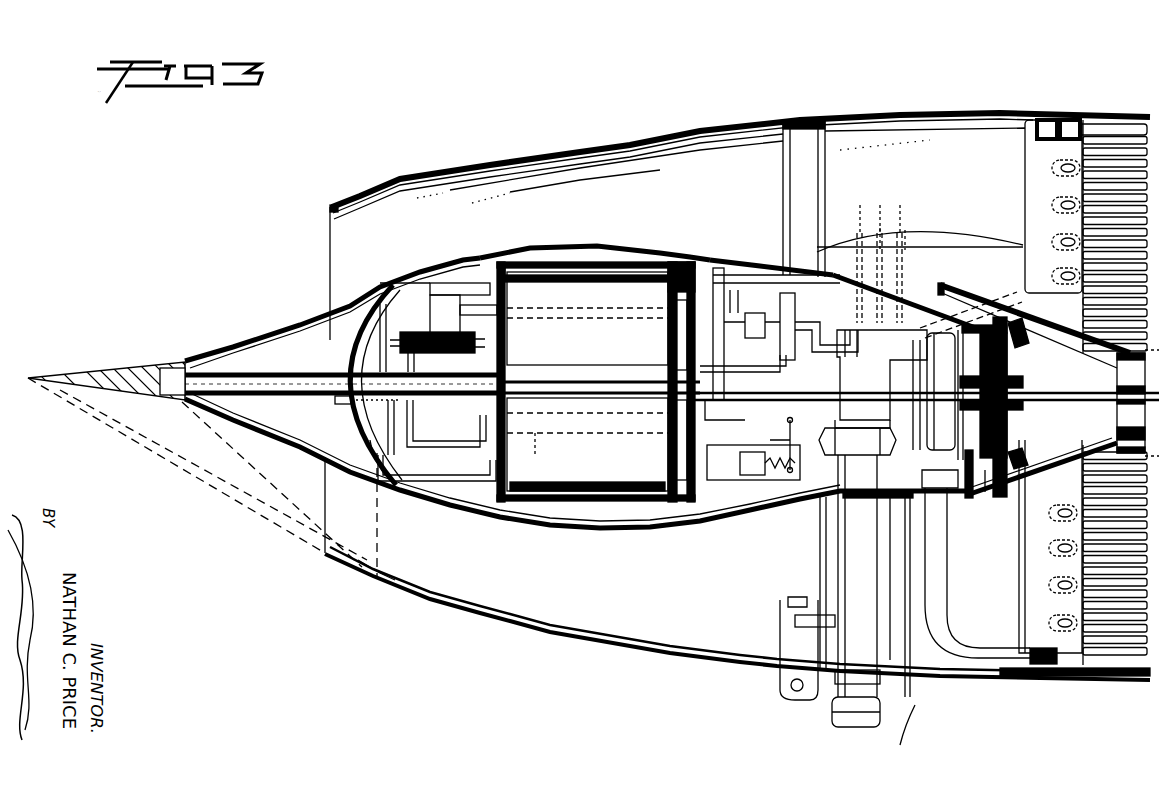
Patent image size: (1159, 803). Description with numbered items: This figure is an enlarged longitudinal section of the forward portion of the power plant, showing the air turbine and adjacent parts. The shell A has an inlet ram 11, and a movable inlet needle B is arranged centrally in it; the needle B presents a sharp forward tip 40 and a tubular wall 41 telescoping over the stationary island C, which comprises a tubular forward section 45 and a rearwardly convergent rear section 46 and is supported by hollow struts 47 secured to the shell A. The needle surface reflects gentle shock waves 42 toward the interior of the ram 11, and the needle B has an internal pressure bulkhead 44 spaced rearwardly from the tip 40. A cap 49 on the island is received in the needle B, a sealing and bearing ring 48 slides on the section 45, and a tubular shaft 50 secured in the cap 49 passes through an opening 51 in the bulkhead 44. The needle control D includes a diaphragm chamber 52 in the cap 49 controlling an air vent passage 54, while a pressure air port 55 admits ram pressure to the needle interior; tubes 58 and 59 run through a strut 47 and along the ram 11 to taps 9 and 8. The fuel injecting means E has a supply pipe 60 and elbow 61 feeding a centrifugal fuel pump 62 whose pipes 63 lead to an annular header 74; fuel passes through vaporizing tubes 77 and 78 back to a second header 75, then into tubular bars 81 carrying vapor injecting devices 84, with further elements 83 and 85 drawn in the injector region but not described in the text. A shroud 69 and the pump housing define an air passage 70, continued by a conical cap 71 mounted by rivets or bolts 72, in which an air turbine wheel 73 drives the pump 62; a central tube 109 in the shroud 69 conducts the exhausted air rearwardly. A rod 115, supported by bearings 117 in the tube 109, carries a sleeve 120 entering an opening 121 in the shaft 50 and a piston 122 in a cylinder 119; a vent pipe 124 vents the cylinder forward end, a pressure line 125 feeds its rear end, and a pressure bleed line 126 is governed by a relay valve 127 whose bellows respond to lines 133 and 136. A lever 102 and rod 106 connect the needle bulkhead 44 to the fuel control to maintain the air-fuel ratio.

The inlet passage tap 8 is at (380, 580).
The inlet passage tap 9 is at (365, 573).
The inlet ram 11 is at (560, 150).
The forward tip 40 is at (138, 360).
The tubular wall 41 is at (540, 250).
The shock waves 42 is at (210, 482).
The pressure bulkhead 44 is at (358, 328).
The tubular forward section 45 is at (612, 246).
The rear section 46 is at (760, 266).
The struts 47 is at (960, 258).
The sealing and bearing ring 48 is at (685, 262).
The cap 49 is at (368, 455).
The tubular shaft 50 is at (295, 372).
The opening 51 is at (343, 402).
The diaphragm chamber 52 is at (480, 350).
The air vent passage 54 is at (477, 308).
The pressure air port 55 is at (640, 528).
The tube 58 is at (450, 441).
The tube 59 is at (437, 441).
The fuel supply pipe 60 is at (868, 590).
The elbow 61 is at (872, 416).
The centrifugal fuel pump 62 is at (951, 416).
The pipes 63 is at (945, 578).
The shroud 69 is at (1018, 508).
The air passage 70 is at (975, 485).
The conical cap 71 is at (1048, 350).
The rivets or bolts 72 is at (1027, 455).
The air turbine wheel 73 is at (1022, 320).
The annular header 74 is at (1046, 120).
The second annular header 75 is at (1074, 120).
The vaporizing tubes 77 is at (1120, 675).
The vaporizing tubes 78 is at (1122, 128).
The tubular bars 81 is at (1052, 195).
The lower nozzle plate 83 is at (1025, 532).
The vapor injecting devices 84 is at (1062, 575).
The flap hinges 85 is at (1058, 522).
The lever 102 is at (791, 435).
The rod 106 is at (735, 422).
The central tube 109 is at (1115, 428).
The rod 115 is at (620, 394).
The bearings 117 is at (1130, 377).
The cylinder 119 is at (604, 488).
The sleeve 120 is at (583, 378).
The opening 121 is at (462, 376).
The piston 122 is at (672, 333).
The vent pipe 124 is at (535, 455).
The pressure line 125 is at (990, 318).
The pressure bleed line 126 is at (686, 346).
The relay valve 127 is at (772, 305).
The line 133 is at (903, 290).
The line 136 is at (775, 388).
The shell A is at (1106, 108).
The inlet needle B is at (446, 517).
The island C is at (757, 523).
The needle control D is at (426, 300).
The fuel injecting means E is at (909, 438).